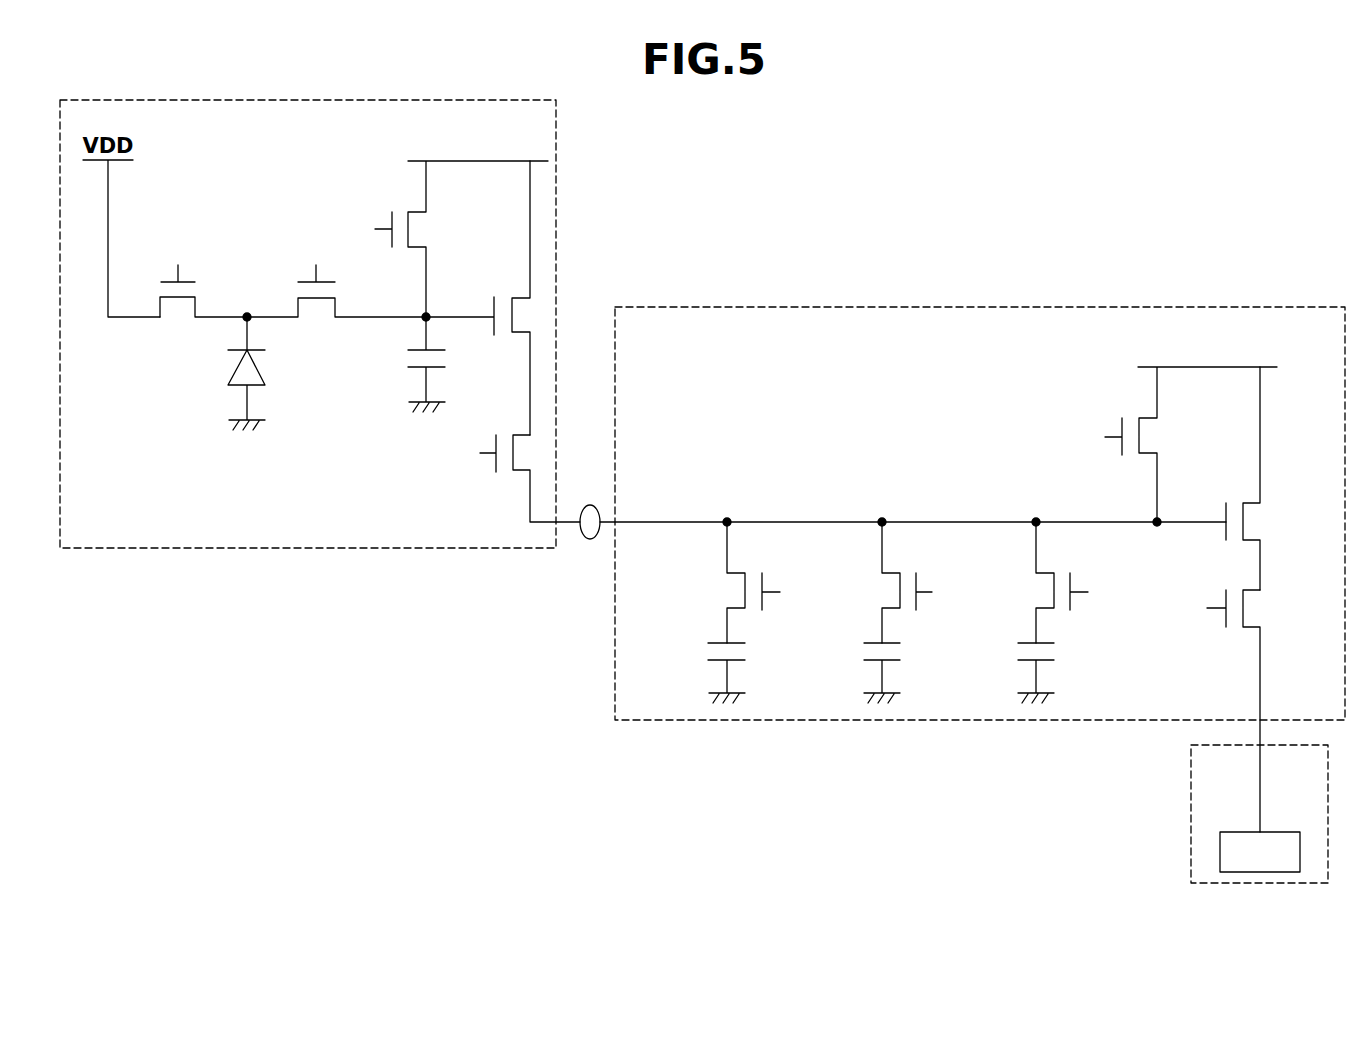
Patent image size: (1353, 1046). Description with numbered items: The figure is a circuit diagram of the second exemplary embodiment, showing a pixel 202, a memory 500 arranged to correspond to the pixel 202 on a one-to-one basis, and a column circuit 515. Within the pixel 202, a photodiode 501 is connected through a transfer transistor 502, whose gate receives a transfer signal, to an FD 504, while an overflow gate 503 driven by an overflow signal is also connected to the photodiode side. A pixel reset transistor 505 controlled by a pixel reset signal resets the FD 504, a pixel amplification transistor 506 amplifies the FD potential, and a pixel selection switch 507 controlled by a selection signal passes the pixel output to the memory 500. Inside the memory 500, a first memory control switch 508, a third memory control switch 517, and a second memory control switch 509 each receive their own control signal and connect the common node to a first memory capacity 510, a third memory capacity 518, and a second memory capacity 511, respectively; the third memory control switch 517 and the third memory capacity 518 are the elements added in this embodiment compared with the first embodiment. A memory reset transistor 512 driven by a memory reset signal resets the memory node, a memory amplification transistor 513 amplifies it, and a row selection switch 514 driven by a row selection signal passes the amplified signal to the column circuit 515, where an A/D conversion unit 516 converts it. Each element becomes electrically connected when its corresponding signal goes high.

The pixel 202 is at (557, 179).
The memory 500 is at (822, 307).
The photodiode 501 is at (246, 388).
The transfer transistor 502 is at (315, 322).
The overflow gate 503 is at (178, 322).
The FD 504 is at (412, 368).
The pixel reset transistor 505 is at (426, 229).
The pixel amplification transistor 506 is at (527, 315).
The pixel selection switch 507 is at (523, 452).
The first memory control switch 508 is at (725, 590).
The second memory control switch 509 is at (1034, 590).
The first memory capacity 510 is at (708, 652).
The second memory capacity 511 is at (1018, 652).
The memory reset transistor 512 is at (1158, 437).
The memory amplification transistor 513 is at (1262, 523).
The row selection switch 514 is at (1262, 608).
The column circuit 515 is at (1190, 797).
The A/D conversion unit 516 is at (1287, 832).
The third memory control switch 517 is at (879, 590).
The third memory capacity 518 is at (864, 652).